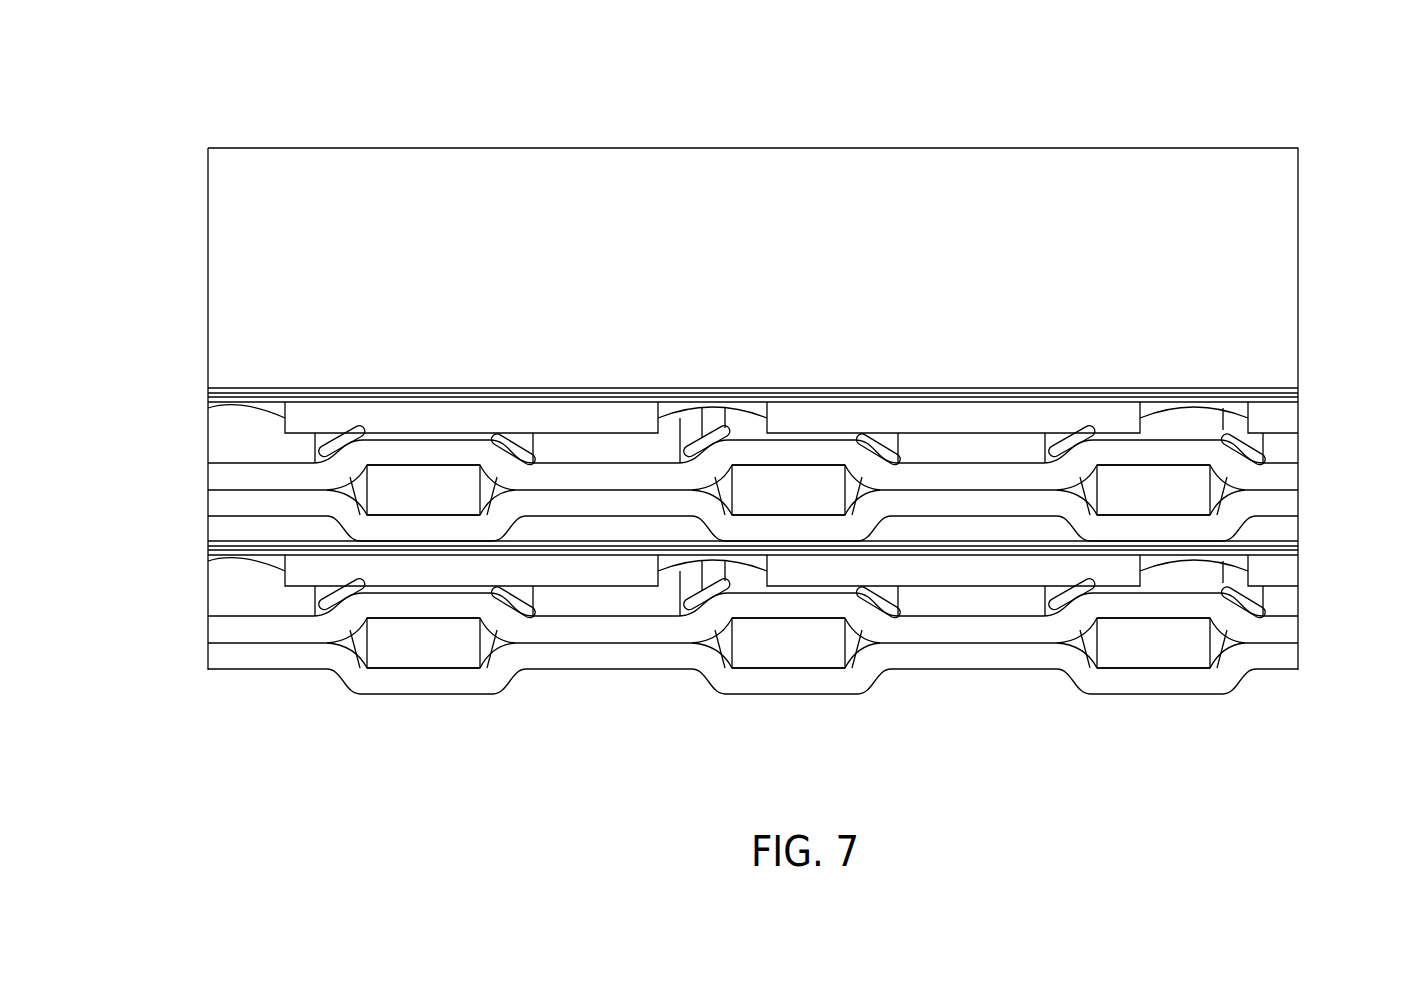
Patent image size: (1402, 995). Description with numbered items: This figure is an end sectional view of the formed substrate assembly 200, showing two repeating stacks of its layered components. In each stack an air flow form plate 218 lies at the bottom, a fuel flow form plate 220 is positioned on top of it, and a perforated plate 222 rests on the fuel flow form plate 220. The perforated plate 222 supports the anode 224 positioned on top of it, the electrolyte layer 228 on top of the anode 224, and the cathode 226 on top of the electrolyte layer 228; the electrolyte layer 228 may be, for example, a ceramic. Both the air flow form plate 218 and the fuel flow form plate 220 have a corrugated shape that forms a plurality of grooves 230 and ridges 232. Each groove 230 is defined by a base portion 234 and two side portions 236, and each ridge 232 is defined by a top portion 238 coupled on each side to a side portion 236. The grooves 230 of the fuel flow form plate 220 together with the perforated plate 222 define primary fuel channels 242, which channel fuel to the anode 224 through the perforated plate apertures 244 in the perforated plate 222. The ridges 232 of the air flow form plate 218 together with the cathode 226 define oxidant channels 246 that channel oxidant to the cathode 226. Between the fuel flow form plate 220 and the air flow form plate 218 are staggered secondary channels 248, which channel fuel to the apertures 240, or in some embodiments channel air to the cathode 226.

The formed substrate assembly 200 is at (1216, 90).
The air flow form plate 218 is at (1302, 504).
The fuel flow form plate 220 is at (1302, 472).
The perforated plate 222 is at (1302, 418).
The anode 224 is at (1302, 396).
The cathode 226 is at (1300, 390).
The electrolyte layer 228 is at (1302, 386).
The groove 230 is at (583, 452).
The ridge 232 is at (425, 430).
The base portion 234 is at (790, 455).
The side portion 236 is at (882, 468).
The top portion 238 is at (604, 666).
The aperture 240 is at (518, 444).
The primary fuel channel 242 is at (244, 458).
The perforated plate aperture 244 is at (250, 405).
The oxidant channel 246 is at (1037, 543).
The staggered secondary channel 248 is at (378, 640).